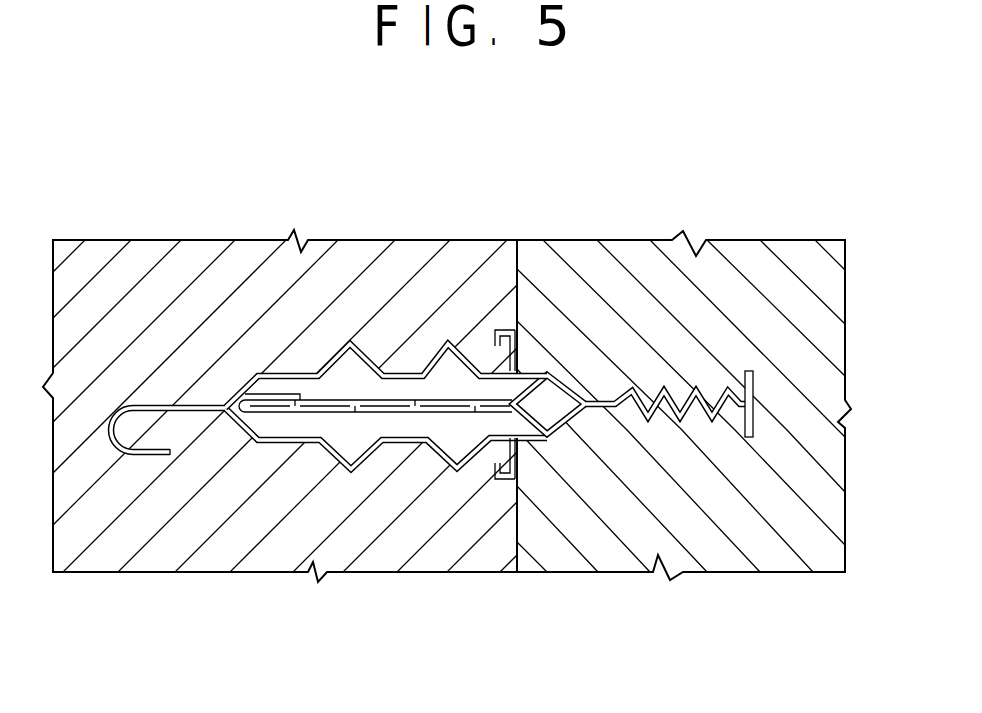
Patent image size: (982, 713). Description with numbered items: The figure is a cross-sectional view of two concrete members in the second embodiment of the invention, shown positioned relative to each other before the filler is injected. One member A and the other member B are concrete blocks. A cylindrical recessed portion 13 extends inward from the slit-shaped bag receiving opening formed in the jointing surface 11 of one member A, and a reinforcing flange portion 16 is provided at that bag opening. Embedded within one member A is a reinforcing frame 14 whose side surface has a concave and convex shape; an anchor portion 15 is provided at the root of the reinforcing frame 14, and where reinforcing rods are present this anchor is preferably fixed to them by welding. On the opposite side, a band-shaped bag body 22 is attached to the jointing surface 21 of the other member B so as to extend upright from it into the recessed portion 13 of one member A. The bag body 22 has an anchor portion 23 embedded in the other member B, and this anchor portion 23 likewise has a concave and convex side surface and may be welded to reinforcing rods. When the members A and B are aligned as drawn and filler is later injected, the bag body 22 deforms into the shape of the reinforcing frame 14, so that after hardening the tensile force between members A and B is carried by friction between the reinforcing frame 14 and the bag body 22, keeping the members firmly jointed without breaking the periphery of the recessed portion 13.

The jointing surface 11 is at (518, 282).
The cylindrical recessed portion 13 is at (360, 442).
The reinforcing frame 14 is at (272, 372).
The anchor portion 15 is at (125, 404).
The reinforcing flange portion 16 is at (520, 458).
The jointing surface 21 is at (512, 287).
The bag body 22 is at (401, 398).
The anchor portion 23 is at (704, 390).
The one member A is at (222, 553).
The other member B is at (712, 553).